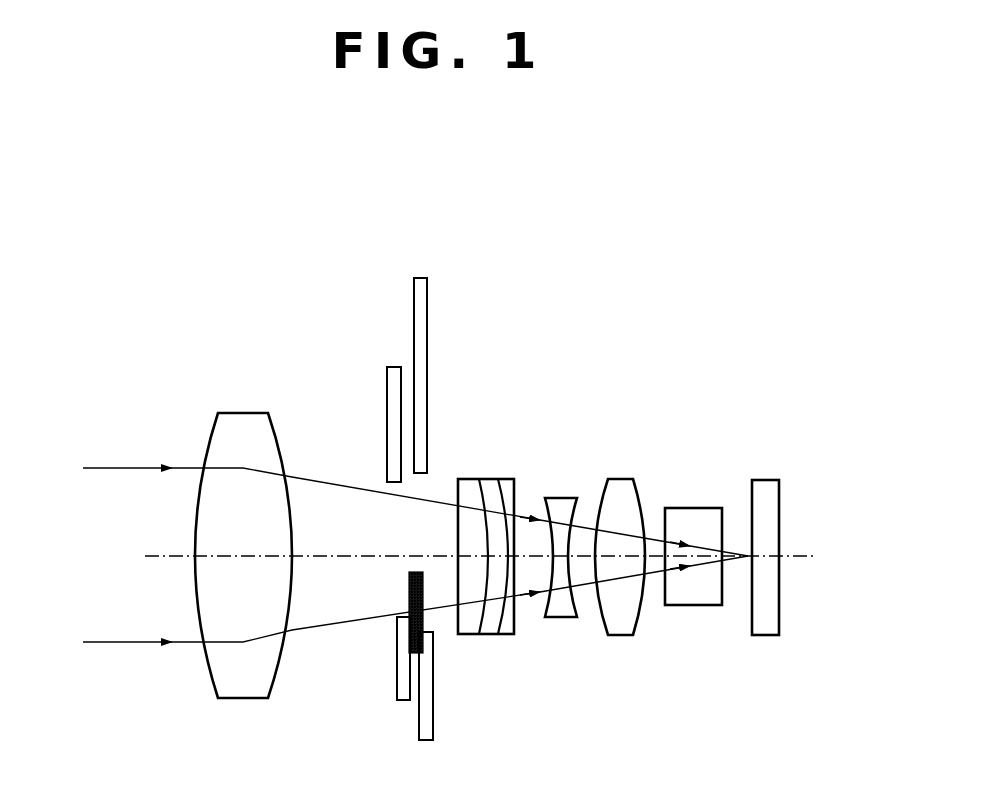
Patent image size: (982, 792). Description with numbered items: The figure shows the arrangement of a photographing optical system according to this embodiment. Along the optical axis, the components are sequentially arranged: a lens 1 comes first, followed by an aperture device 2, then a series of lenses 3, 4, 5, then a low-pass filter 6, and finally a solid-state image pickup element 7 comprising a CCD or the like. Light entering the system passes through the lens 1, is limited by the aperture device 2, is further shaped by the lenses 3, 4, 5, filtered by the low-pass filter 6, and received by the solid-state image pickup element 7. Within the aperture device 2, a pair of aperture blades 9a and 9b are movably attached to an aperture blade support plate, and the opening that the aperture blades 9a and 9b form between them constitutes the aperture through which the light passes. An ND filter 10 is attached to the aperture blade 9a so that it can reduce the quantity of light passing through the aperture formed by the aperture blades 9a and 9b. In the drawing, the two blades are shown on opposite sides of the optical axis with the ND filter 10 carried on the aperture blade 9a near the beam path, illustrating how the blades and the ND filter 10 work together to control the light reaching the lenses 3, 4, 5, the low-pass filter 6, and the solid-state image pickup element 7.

The lens 1 is at (245, 425).
The aperture device 2 is at (348, 324).
The lens 3 is at (472, 492).
The lens 4 is at (562, 510).
The lens 5 is at (622, 492).
The low-pass filter 6 is at (695, 521).
The solid-state image pickup element 7 is at (769, 492).
The aperture blade 9a is at (400, 684).
The aperture blade 9b is at (396, 432).
The ND filter 10 is at (410, 590).